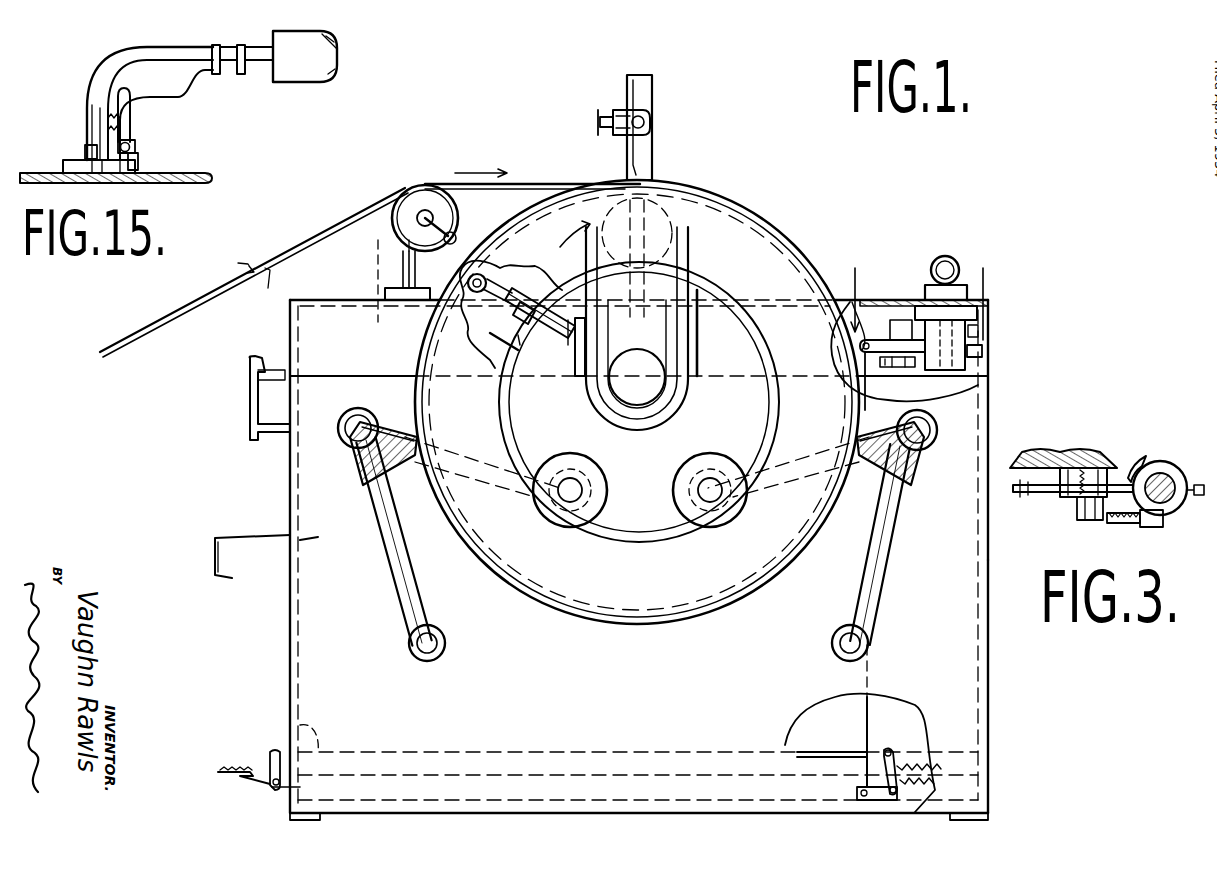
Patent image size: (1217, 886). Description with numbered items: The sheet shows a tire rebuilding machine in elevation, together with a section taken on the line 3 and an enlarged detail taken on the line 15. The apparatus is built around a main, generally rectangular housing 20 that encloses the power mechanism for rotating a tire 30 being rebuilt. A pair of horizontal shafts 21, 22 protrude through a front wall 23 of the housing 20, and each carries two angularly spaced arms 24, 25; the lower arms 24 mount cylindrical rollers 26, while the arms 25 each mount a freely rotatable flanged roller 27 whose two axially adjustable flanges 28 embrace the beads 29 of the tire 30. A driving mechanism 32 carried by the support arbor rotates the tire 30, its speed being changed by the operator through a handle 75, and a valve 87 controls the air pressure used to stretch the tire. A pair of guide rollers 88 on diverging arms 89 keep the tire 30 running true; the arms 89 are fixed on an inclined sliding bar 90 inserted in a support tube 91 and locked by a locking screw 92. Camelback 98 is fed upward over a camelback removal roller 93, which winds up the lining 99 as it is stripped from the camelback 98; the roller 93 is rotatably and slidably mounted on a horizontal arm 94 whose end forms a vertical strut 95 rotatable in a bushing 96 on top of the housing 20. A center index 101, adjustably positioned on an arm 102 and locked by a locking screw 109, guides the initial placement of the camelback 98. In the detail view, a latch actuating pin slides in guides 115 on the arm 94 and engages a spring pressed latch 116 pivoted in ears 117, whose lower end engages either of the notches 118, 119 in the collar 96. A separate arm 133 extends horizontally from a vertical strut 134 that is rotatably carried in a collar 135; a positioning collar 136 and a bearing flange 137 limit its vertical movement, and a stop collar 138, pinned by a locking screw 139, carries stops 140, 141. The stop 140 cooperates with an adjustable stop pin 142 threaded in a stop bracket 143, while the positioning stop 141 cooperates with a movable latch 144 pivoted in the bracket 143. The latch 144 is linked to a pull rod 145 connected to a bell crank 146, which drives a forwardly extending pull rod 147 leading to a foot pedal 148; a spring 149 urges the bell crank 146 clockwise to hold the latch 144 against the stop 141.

In FIG. 1, the section line 3— 3 is at (915, 292).
In FIG. 1, the section line 15— 15 is at (372, 244).
In FIG. 15, the main housing 20 is at (180, 174).
In FIG. 1, the main housing 20 is at (990, 408).
In FIG. 1, the horizontal shaft 21 is at (340, 432).
In FIG. 1, the horizontal shaft 22 is at (937, 443).
In FIG. 1, the front wall 23 is at (968, 683).
In FIG. 1, the lower arm 24 is at (392, 596).
In FIG. 1, the arm 25 is at (392, 438).
In FIG. 1, the roller 26 is at (446, 645).
In FIG. 1, the flanged roller 27 is at (590, 449).
In FIG. 1, the flanges 28 is at (672, 488).
In FIG. 1, the beads 29 is at (772, 384).
In FIG. 1, the tire 30 is at (722, 612).
In FIG. 1, the driving mechanism 32 is at (707, 339).
In FIG. 1, the handle 75 is at (233, 555).
In FIG. 1, the valve 87 is at (265, 430).
In FIG. 1, the guide rollers 88 is at (490, 279).
In FIG. 1, the diverging arms 89 is at (526, 284).
In FIG. 1, the inclined sliding bar 90 is at (512, 312).
In FIG. 1, the support tube 91 is at (562, 340).
In FIG. 1, the locking screw 92 is at (518, 342).
In FIG. 15, the camelback removal roller 93 is at (305, 88).
In FIG. 1, the camelback removal roller 93 is at (460, 216).
In FIG. 15, the horizontal arm 94 is at (140, 50).
In FIG. 15, the vertical strut 95 is at (88, 118).
In FIG. 1, the vertical strut 95 is at (392, 268).
In FIG. 15, the bushing 96 is at (60, 165).
In FIG. 1, the bushing 96 is at (425, 292).
In FIG. 1, the camelback 98 is at (305, 243).
In FIG. 1, the camelback lining 99 is at (292, 256).
In FIG. 1, the center index 101 is at (625, 150).
In FIG. 1, the arm 102 is at (648, 112).
In FIG. 1, the locking screw 109 is at (596, 120).
In FIG. 15, the guides 115 is at (216, 75).
In FIG. 15, the spring pressed latch 116 is at (134, 122).
In FIG. 15, the ears 117 is at (132, 146).
In FIG. 15, the vertical notch 118 is at (136, 156).
In FIG. 15, the vertical notch 119 is at (85, 150).
In FIG. 1, the arm 133 is at (930, 268).
In FIG. 1, the vertical strut 134 is at (925, 292).
In FIG. 3, the vertical strut 134 is at (1148, 464).
In FIG. 1, the collar 135 is at (920, 302).
In FIG. 1, the positioning collar 136 is at (986, 342).
In FIG. 1, the bearing flange 137 is at (986, 296).
In FIG. 1, the stop collar 138 is at (985, 368).
In FIG. 3, the stop collar 138 is at (1180, 506).
In FIG. 3, the locking screw 139 is at (1163, 474).
In FIG. 3, the stop 140 is at (1140, 528).
In FIG. 3, the positioning stop 141 is at (1098, 450).
In FIG. 3, the adjustable stop pin 142 is at (1103, 525).
In FIG. 3, the stop bracket 143 is at (1078, 512).
In FIG. 1, the movable latch 144 is at (878, 375).
In FIG. 3, the movable latch 144 is at (1038, 494).
In FIG. 1, the pull rod 145 is at (848, 397).
In FIG. 1, the bell crank 146 is at (905, 750).
In FIG. 1, the pull rod 147 is at (300, 720).
In FIG. 1, the foot pedal 148 is at (238, 762).
In FIG. 1, the spring 149 is at (912, 762).